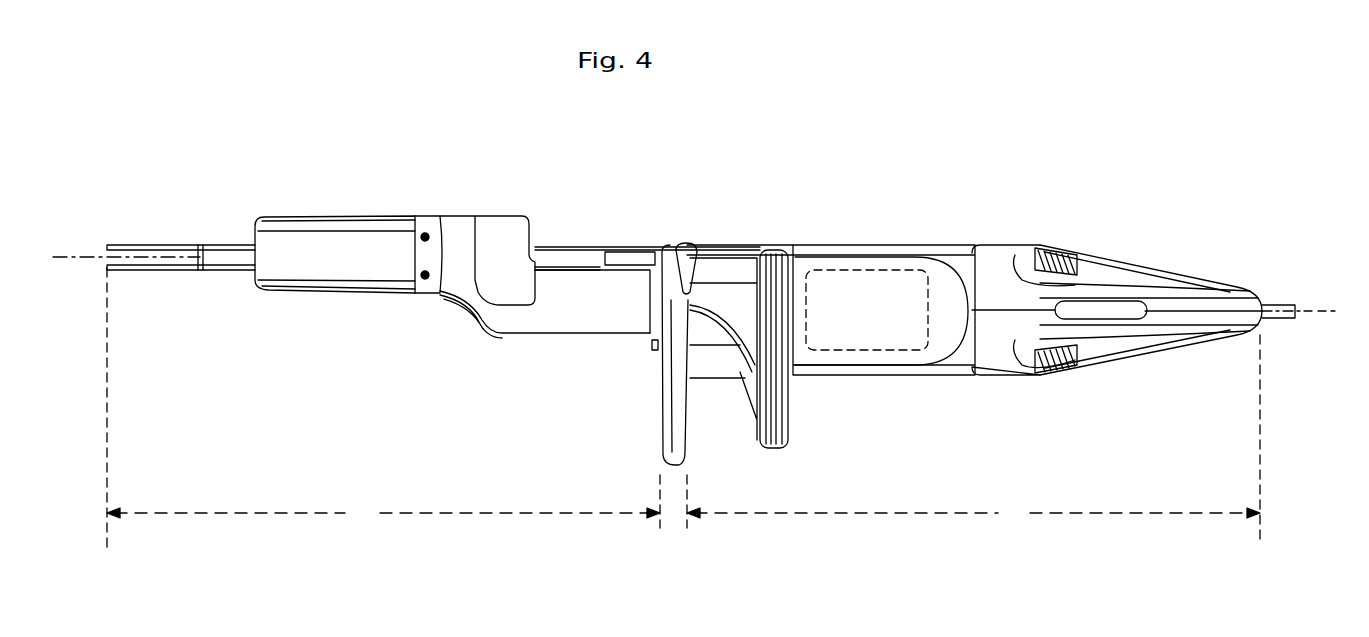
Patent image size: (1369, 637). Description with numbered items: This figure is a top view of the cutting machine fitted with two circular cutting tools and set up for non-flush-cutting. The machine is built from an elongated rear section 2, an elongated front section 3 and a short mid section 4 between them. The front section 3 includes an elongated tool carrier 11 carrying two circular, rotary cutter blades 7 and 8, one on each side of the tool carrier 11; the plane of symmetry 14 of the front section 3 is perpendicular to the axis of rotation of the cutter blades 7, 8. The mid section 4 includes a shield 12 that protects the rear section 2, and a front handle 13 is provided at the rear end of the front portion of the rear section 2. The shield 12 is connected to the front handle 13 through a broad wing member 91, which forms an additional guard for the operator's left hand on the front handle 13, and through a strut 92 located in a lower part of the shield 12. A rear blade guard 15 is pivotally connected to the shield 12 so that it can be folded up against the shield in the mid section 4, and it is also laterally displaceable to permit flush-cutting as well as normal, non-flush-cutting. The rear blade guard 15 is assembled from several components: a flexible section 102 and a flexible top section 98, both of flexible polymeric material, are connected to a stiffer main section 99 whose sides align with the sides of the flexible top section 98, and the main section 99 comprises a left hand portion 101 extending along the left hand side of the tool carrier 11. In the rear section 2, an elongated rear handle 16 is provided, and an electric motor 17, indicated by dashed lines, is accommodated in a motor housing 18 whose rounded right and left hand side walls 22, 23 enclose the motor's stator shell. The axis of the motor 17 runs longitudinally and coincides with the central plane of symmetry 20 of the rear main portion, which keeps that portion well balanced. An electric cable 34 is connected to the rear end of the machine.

The rear section 2 is at (973, 513).
The front section 3 is at (383, 513).
The mid section 4 is at (674, 532).
The cutter blade 7 is at (150, 240).
The cutter blade 8 is at (150, 272).
The tool carrier 11 is at (597, 258).
The shield 12 is at (665, 452).
The front handle 13 is at (795, 445).
The plane of symmetry 14 is at (90, 250).
The rear blade guard 15 is at (436, 241).
The rear handle 16 is at (1195, 295).
The electric motor 17 is at (845, 285).
The motor housing 18 is at (890, 285).
The central plane of symmetry 20 is at (1310, 310).
The right hand side wall 22 is at (985, 245).
The left hand side wall 23 is at (940, 380).
The electric cable 34 is at (1275, 320).
The wing member 91 is at (735, 245).
The strut 92 is at (720, 385).
The flexible top section 98 is at (345, 255).
The main section 99 is at (455, 235).
The left hand portion 101 is at (585, 300).
The flexible section 102 is at (495, 250).